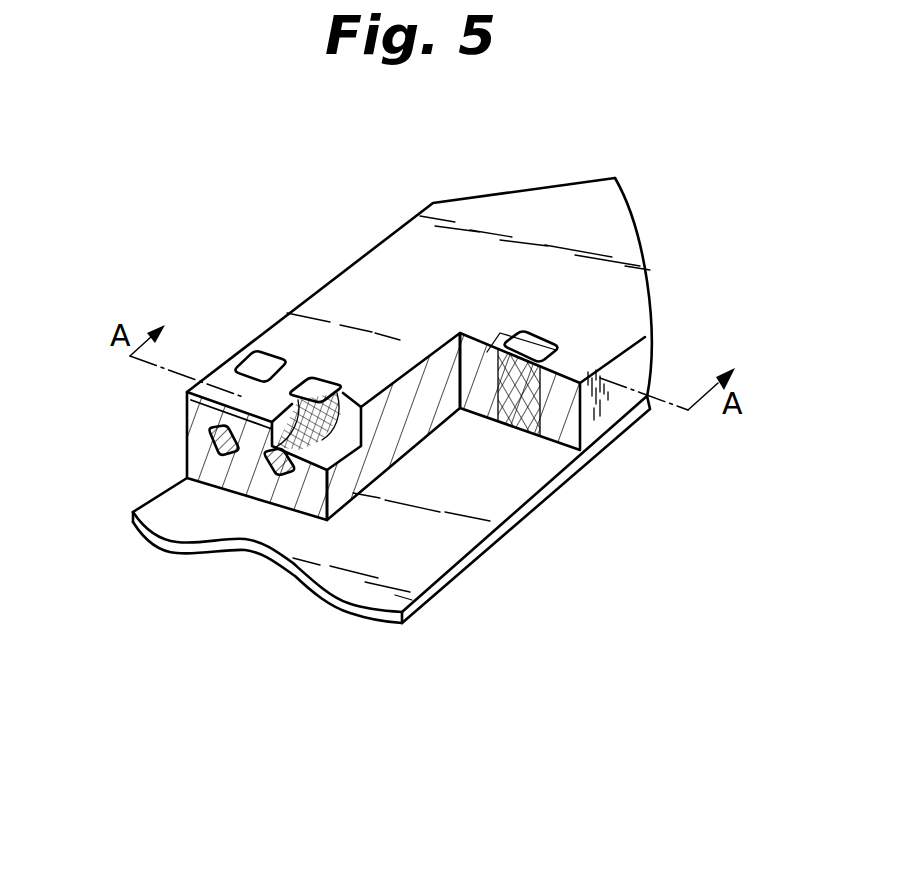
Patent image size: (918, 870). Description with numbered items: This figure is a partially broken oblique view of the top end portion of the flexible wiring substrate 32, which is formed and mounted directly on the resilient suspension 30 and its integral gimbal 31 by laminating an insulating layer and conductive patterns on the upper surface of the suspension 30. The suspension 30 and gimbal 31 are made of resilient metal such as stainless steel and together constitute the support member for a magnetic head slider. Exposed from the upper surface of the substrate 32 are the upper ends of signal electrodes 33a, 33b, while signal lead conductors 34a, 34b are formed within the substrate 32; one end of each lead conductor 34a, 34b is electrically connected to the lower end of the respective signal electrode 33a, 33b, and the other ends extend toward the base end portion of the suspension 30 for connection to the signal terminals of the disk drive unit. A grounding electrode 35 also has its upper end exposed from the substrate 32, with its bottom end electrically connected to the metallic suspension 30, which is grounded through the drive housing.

The resilient suspension 30 is at (391, 509).
The gimbal 31 is at (445, 545).
The flexible wiring substrate 32 is at (498, 207).
The signal electrode 33a is at (263, 353).
The signal electrode 33b is at (320, 380).
The signal lead conductor 34a is at (212, 433).
The signal lead conductor 34b is at (182, 472).
The grounding electrode 35 is at (537, 345).